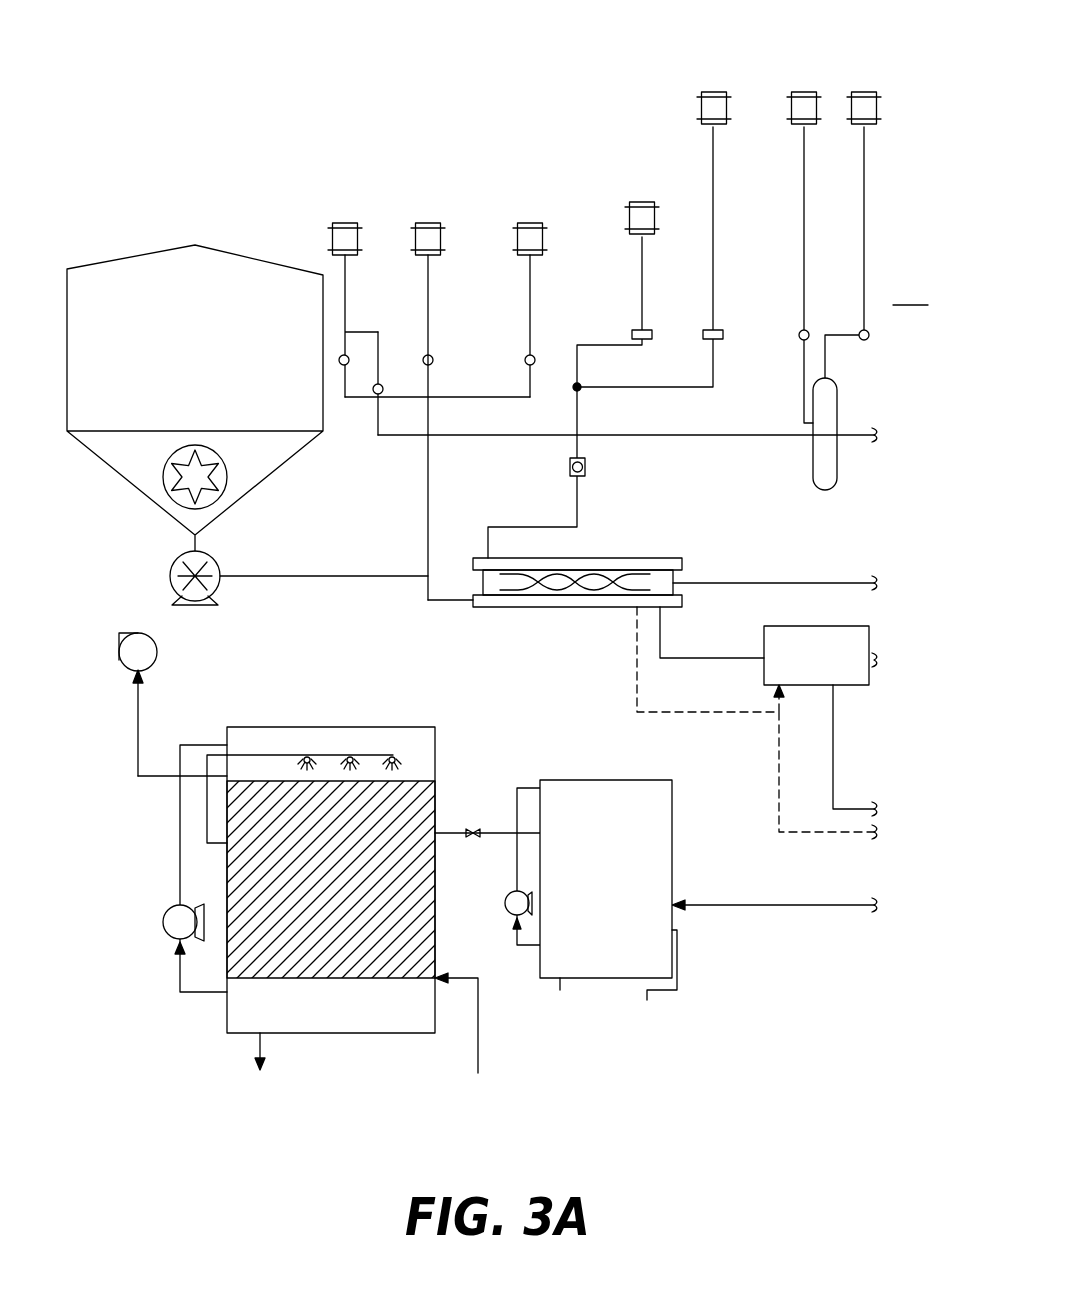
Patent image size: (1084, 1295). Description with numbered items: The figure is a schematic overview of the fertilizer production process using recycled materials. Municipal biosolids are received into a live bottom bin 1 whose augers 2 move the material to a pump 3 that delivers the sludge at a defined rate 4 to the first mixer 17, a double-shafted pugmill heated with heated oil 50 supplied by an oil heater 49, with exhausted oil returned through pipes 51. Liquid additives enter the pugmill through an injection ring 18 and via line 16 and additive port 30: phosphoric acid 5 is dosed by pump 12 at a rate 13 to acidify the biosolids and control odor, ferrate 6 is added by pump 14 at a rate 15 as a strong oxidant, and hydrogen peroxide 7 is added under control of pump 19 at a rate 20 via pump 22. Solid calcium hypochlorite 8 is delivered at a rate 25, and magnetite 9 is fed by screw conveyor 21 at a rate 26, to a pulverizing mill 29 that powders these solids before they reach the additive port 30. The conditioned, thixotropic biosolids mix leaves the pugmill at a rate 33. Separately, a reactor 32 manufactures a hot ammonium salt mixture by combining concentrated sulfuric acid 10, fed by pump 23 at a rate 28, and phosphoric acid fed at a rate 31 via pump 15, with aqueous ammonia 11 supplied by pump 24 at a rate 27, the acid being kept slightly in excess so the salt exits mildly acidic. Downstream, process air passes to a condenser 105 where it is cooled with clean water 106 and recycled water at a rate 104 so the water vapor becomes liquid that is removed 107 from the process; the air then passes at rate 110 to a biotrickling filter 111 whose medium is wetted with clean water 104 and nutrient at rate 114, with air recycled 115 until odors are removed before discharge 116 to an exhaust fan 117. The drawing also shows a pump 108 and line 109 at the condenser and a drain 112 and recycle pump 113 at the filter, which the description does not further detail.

The live bottom bin 1 is at (195, 398).
The augers 2 is at (216, 472).
The pump 3 is at (174, 564).
The defined rate 4 is at (362, 578).
The phosphoric acid 5 is at (340, 222).
The ferrate 6 is at (417, 223).
The hydrogen peroxide 7 is at (530, 222).
The calcium hypochlorite 8 is at (642, 202).
The magnetite 9 is at (710, 92).
The sulfuric acid 10 is at (800, 92).
The aqueous ammonia 11 is at (860, 92).
The pump 12 is at (346, 364).
The rate 13 is at (352, 400).
The pump 14 is at (423, 360).
The rate 15 is at (406, 386).
The line 16 is at (427, 514).
The first mixer 17 is at (490, 608).
The injection ring 18 is at (432, 601).
The pump 19 is at (524, 361).
The rate 20 is at (492, 433).
The screw conveyor 21 is at (632, 334).
The pump 22 is at (703, 334).
The pump 23 is at (800, 332).
The pump 24 is at (870, 335).
The rate 25 is at (578, 382).
The rate 26 is at (650, 386).
The rate 27 is at (826, 350).
The rate 28 is at (802, 406).
The pulverizing mill 29 is at (569, 466).
The additive port 30 is at (490, 556).
The rate 31 is at (662, 436).
The reactor 32 is at (837, 462).
The rate 33 is at (700, 583).
The oil heater 49 is at (820, 685).
The heated oil 50 is at (696, 658).
The pipes 51 is at (779, 730).
The clean water 104 is at (478, 1048).
The condenser 105 is at (672, 800).
The clean water 106 is at (649, 998).
The removed liquid 107 is at (559, 1034).
The quench recirculation pump 108 is at (505, 904).
The quench recirculation line 109 is at (498, 834).
The rate 110 is at (486, 828).
The biotrickling filter 111 is at (346, 1036).
The filter drain 112 is at (262, 1040).
The recycle pump 113 is at (163, 920).
The rate 114 is at (180, 862).
The air recycle 115 is at (227, 882).
The discharge 116 is at (150, 776).
The exhaust fan 117 is at (174, 700).